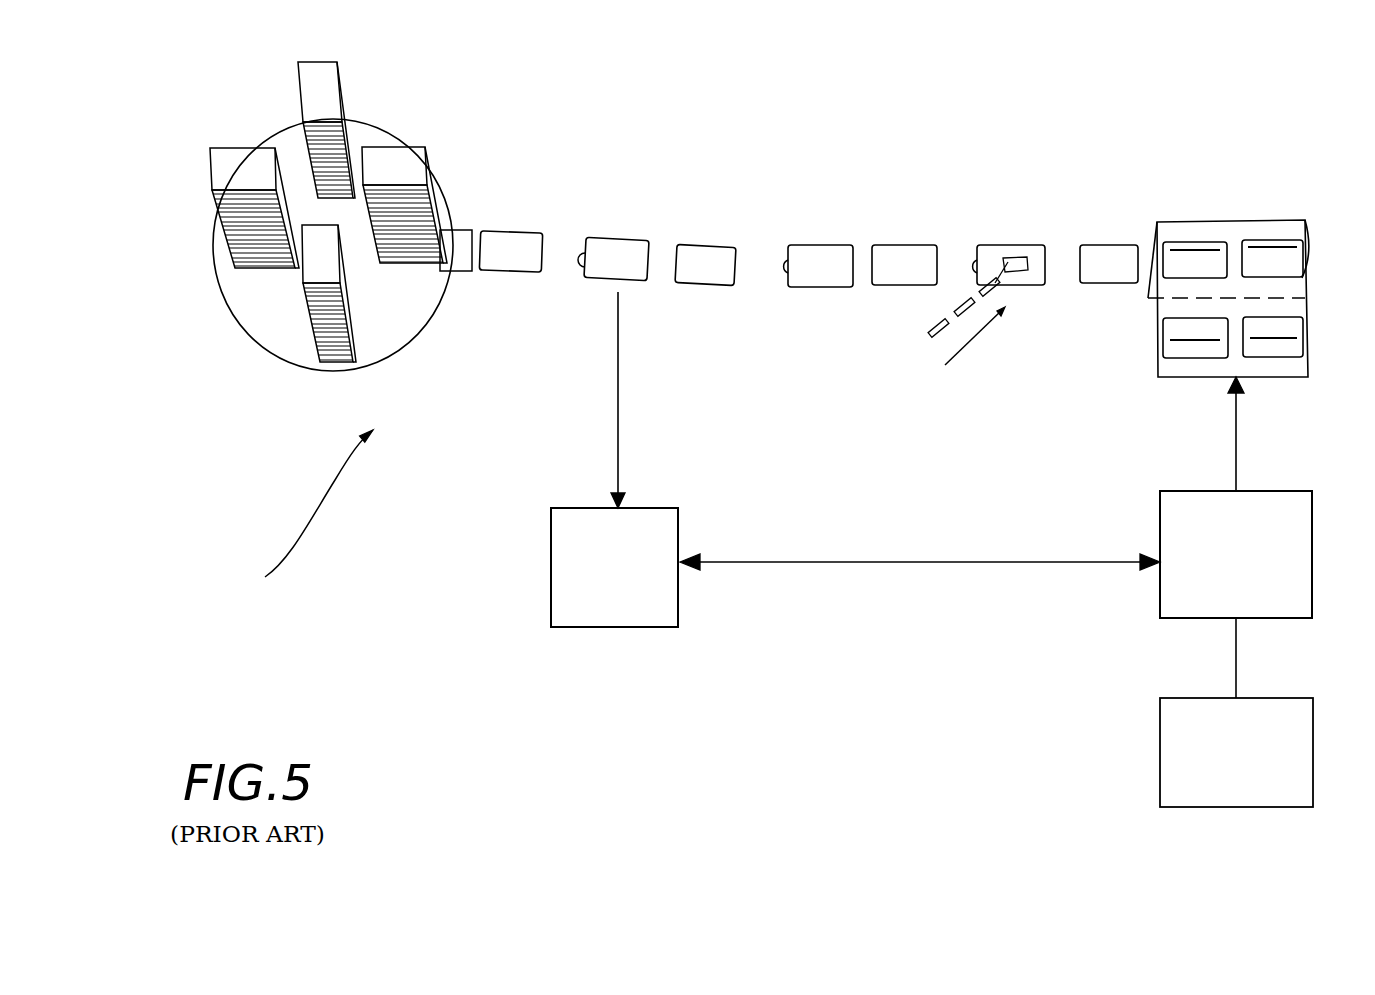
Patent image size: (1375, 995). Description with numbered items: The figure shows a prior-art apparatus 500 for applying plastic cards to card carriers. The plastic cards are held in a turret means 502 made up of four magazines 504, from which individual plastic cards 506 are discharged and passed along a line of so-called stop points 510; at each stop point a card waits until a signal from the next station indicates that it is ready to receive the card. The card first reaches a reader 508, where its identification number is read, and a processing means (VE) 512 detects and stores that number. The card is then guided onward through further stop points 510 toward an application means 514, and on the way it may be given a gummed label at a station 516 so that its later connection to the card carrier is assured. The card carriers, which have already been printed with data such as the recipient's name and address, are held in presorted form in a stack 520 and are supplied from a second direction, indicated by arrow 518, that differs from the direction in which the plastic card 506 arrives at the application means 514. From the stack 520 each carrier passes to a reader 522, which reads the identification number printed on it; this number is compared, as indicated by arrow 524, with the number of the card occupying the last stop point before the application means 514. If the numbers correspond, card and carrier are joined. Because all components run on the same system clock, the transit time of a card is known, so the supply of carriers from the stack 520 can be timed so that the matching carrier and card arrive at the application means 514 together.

The apparatus for applying plastic cards and card carriers 500 is at (286, 523).
The turret means 502 is at (389, 131).
The magazines 504 is at (320, 108).
The plastic card 506 is at (460, 228).
The reader 508 is at (617, 238).
The stop points 510 is at (508, 265).
The processing means (VE) 512 is at (551, 580).
The application means 514 is at (1285, 225).
The station 516 is at (1020, 245).
The arrow 518 is at (1236, 440).
The stack 520 is at (1290, 807).
The reader 522 is at (1282, 618).
The arrow 524 is at (1028, 562).